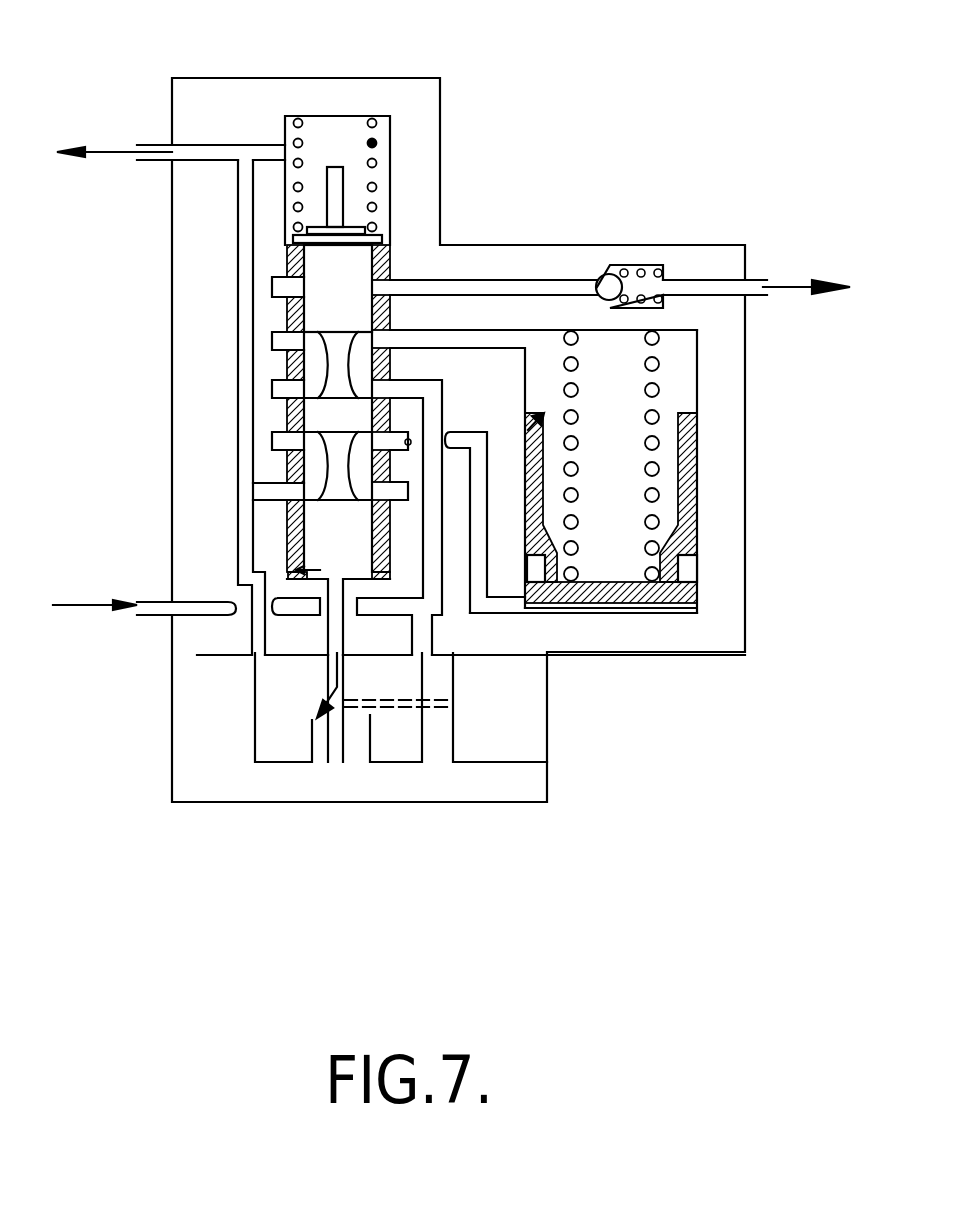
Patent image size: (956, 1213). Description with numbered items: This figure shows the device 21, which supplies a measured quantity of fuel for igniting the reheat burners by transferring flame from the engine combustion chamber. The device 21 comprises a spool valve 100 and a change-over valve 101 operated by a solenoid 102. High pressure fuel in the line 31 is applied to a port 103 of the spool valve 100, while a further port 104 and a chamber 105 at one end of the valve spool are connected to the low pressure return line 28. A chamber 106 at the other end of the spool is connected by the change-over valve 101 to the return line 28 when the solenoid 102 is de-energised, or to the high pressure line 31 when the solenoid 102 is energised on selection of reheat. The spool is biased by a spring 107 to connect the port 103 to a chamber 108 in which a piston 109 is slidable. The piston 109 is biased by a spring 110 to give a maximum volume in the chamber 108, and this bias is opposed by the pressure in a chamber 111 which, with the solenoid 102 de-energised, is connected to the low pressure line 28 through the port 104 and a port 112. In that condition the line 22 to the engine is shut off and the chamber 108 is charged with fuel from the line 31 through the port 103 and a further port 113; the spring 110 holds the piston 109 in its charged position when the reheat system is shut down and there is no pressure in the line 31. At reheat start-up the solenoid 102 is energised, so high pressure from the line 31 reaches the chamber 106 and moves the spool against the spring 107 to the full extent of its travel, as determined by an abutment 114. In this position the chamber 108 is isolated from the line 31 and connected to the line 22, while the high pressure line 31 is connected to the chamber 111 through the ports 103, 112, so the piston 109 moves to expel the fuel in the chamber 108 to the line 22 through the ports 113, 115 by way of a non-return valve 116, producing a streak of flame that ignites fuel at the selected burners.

The device 21 is at (652, 722).
The line 22 is at (748, 290).
The low pressure return line 28 is at (168, 147).
The line 31 is at (158, 612).
The spool valve 100 is at (318, 301).
The change-over valve 101 is at (338, 762).
The solenoid 102 is at (510, 730).
The port 103 is at (270, 392).
The further port 104 is at (293, 492).
The chamber 105 is at (347, 140).
The chamber 106 is at (300, 573).
The spring 107 is at (376, 143).
The chamber 108 is at (670, 392).
The piston 109 is at (690, 515).
The spring 110 is at (658, 363).
The chamber 111 is at (510, 605).
The port 112 is at (272, 443).
The further port 113 is at (378, 343).
The abutment 114 is at (340, 205).
The port 115 is at (378, 287).
The non-return valve 116 is at (653, 268).